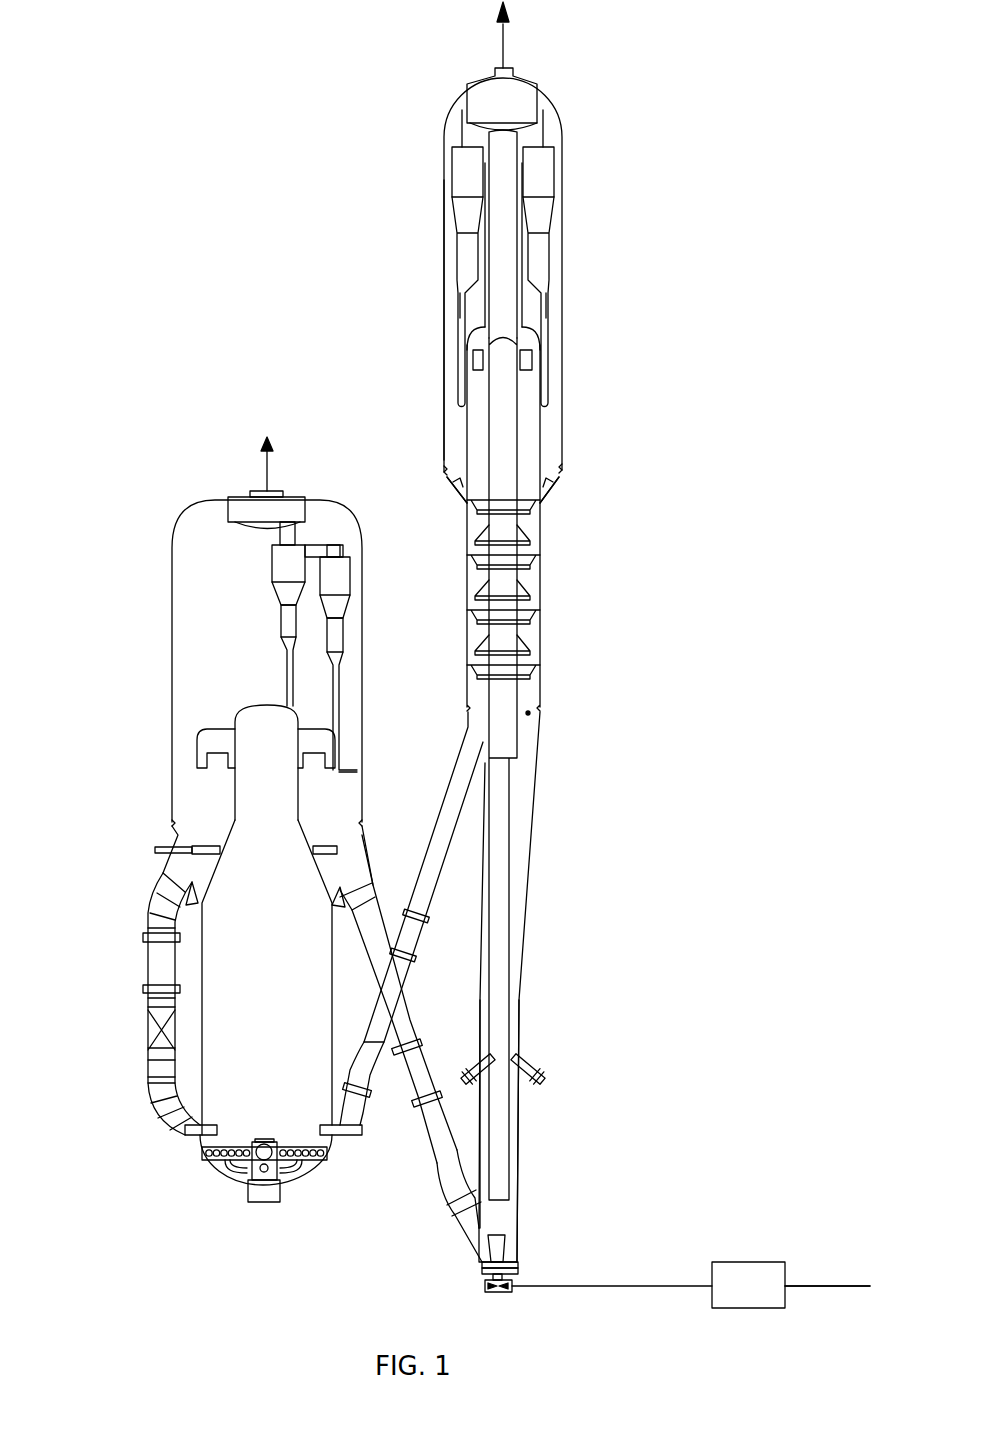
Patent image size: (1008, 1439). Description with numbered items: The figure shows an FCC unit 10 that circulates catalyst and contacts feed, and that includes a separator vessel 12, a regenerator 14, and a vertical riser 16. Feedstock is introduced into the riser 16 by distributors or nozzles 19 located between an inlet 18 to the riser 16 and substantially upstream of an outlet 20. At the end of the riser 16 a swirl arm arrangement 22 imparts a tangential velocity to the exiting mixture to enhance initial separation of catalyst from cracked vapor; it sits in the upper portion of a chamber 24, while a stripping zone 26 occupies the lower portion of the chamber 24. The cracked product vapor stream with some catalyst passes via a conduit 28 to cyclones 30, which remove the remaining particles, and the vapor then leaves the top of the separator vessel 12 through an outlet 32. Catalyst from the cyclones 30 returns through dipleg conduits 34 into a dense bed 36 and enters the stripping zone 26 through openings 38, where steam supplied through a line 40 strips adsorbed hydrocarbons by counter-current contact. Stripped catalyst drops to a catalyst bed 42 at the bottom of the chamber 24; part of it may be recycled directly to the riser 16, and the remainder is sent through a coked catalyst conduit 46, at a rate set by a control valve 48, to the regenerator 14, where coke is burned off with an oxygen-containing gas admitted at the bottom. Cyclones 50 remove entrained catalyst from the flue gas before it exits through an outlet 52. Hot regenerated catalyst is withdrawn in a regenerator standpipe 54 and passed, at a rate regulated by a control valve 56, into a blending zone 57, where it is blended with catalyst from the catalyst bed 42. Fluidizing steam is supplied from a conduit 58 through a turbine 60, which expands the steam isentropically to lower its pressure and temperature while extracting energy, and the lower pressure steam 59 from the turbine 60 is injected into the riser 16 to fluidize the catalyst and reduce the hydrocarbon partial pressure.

The FCC unit 10 is at (311, 206).
The separator vessel 12 is at (685, 506).
The regenerator 14 is at (123, 654).
The vertical riser 16 is at (611, 887).
The inlet 18 is at (481, 1235).
The distributors or nozzles 19 is at (480, 1063).
The outlet 20 is at (525, 358).
The swirl arm arrangement 22 is at (477, 340).
The chamber 24 is at (451, 533).
The stripping zone 26 is at (530, 575).
The conduit 28 is at (505, 232).
The cyclones 30 is at (463, 173).
The outlet 32 is at (496, 88).
The dipleg conduits 34 is at (462, 388).
The dense bed 36 is at (448, 473).
The openings 38 is at (468, 492).
The line 40 is at (528, 713).
The catalyst bed 42 is at (528, 733).
The coked catalyst conduit 46 is at (452, 805).
The control valve 48 is at (372, 1065).
The cyclones 50 is at (283, 560).
The outlet 52 is at (250, 508).
The regenerator standpipe 54 is at (410, 1040).
The control valve 56 is at (446, 1178).
The blending zone 57 is at (512, 1225).
The conduit 58 is at (830, 1284).
The lower pressure steam 59 is at (640, 1289).
The turbine 60 is at (750, 1262).